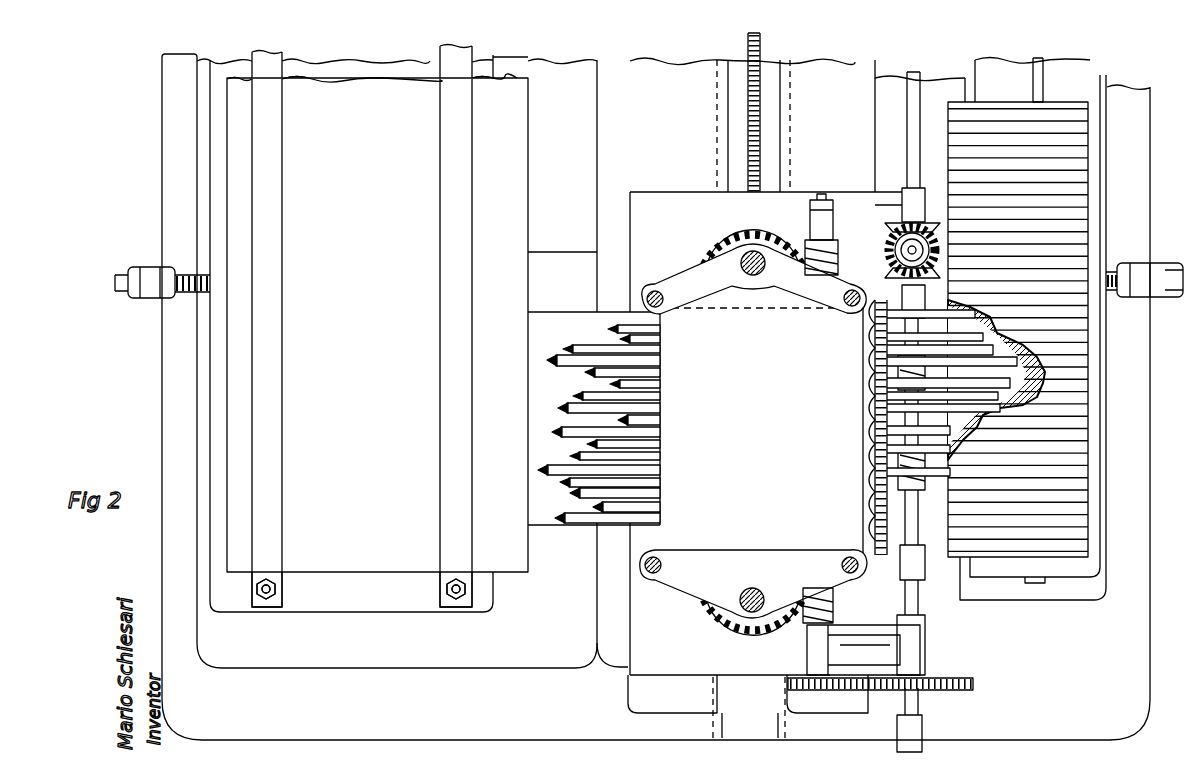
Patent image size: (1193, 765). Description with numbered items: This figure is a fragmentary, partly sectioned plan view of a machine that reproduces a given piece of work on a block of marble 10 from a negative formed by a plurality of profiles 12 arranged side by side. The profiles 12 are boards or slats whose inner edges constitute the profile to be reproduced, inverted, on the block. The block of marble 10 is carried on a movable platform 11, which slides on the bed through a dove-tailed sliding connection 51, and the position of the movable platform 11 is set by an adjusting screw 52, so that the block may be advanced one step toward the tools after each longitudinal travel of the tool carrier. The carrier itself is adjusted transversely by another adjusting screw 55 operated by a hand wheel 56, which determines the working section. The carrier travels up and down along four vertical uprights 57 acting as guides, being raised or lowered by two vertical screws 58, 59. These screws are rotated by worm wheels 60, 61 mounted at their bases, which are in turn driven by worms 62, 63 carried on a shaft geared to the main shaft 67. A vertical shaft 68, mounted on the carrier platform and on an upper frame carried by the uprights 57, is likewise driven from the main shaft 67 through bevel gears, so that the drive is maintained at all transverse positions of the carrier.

The block of marble 10 is at (372, 560).
The movable platform 11 is at (675, 518).
The profiles 12 is at (1045, 530).
The dove-tailed sliding connection 51 is at (205, 312).
The adjusting screw 52 is at (187, 292).
The adjusting screw 55 is at (762, 50).
The hand wheel 56 is at (955, 680).
The vertical uprights 57 is at (851, 306).
The vertical screw 58 is at (757, 595).
The vertical screw 59 is at (760, 272).
The worm wheel 60 is at (720, 628).
The worm wheel 61 is at (713, 248).
The worm 62 is at (803, 620).
The worm 63 is at (800, 250).
The main shaft 67 is at (905, 130).
The vertical shaft 68 is at (905, 243).